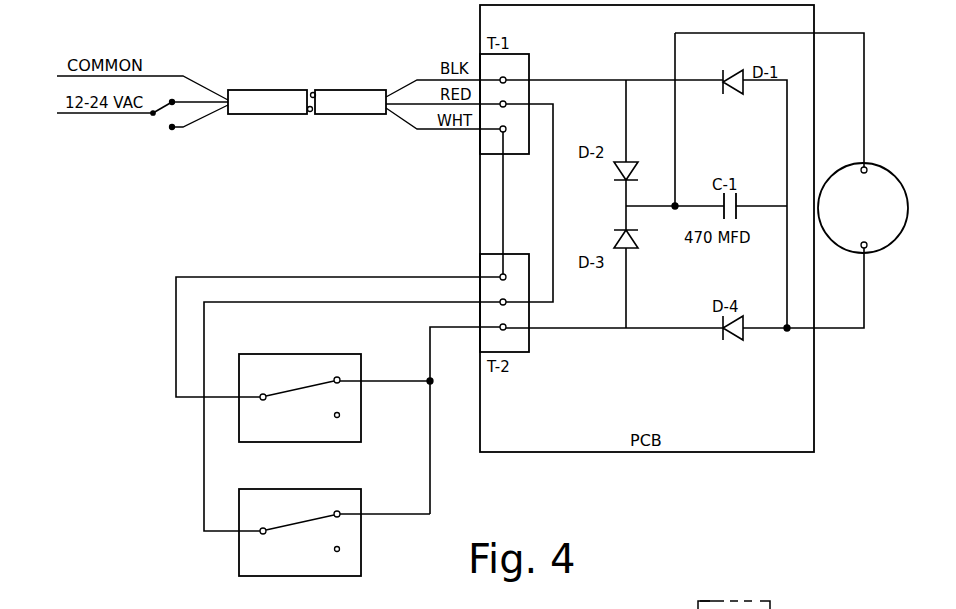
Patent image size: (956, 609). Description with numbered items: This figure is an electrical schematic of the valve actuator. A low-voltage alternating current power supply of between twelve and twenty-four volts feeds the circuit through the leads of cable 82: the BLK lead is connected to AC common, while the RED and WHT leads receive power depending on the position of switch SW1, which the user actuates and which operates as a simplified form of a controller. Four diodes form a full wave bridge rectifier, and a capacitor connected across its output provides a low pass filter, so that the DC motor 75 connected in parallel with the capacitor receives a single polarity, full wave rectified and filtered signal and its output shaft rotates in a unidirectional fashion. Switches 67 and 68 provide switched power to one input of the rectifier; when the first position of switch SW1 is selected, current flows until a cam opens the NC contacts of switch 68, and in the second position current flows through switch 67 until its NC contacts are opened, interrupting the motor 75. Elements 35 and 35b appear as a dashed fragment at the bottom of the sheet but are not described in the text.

The cable 82 is at (240, 114).
The DC motor 75 is at (882, 165).
The switch 67 is at (362, 397).
The switch 68 is at (362, 531).
The housing 35 is at (752, 599).
The housing portion 35b is at (714, 608).
The switch SW1 is at (150, 130).